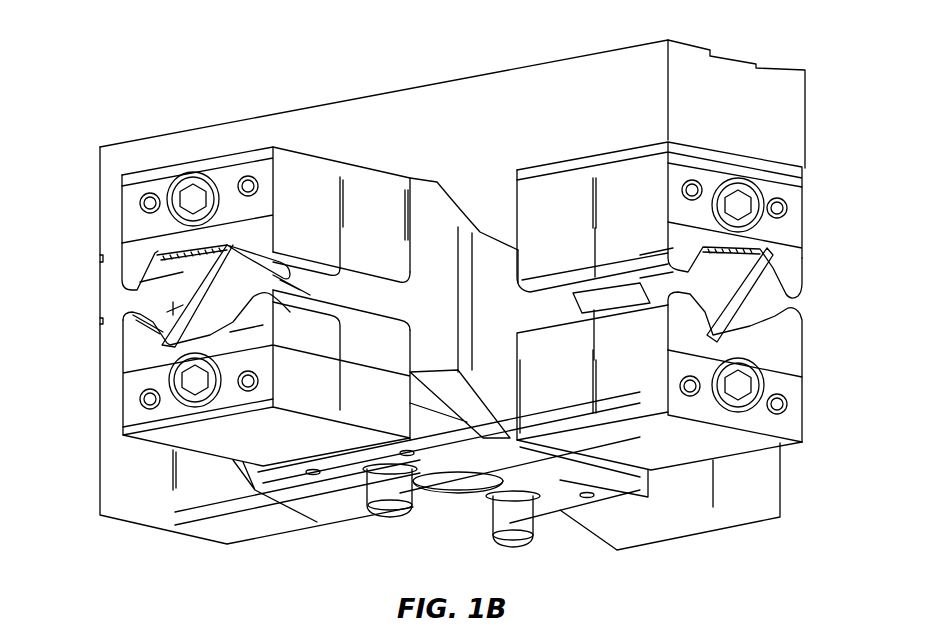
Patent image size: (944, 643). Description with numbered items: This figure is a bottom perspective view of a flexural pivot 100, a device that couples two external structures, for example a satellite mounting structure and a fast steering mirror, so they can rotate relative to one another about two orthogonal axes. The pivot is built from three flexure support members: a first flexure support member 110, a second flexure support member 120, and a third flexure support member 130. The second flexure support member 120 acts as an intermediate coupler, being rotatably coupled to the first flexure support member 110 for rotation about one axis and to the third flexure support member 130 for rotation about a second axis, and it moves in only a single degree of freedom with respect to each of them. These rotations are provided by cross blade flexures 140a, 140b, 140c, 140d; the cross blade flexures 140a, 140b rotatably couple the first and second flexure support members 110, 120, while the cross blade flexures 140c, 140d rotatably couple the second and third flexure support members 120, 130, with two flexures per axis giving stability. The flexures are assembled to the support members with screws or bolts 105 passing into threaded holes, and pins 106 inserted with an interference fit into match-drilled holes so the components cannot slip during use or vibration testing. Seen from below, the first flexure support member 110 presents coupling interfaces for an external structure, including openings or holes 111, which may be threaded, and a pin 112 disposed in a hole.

The flexural pivot 100 is at (352, 44).
The screws or bolts 105 is at (183, 184).
The pins 106 is at (138, 203).
The first flexure support member 110 is at (455, 503).
The openings or holes 111 is at (441, 496).
The pin 112 is at (391, 506).
The second flexure support member 120 is at (433, 222).
The third flexure support member 130 is at (533, 63).
The cross blade flexure 140a is at (110, 289).
The cross blade flexure 140b is at (738, 548).
The cross blade flexure 140c is at (814, 283).
The cross blade flexure 140d is at (148, 540).